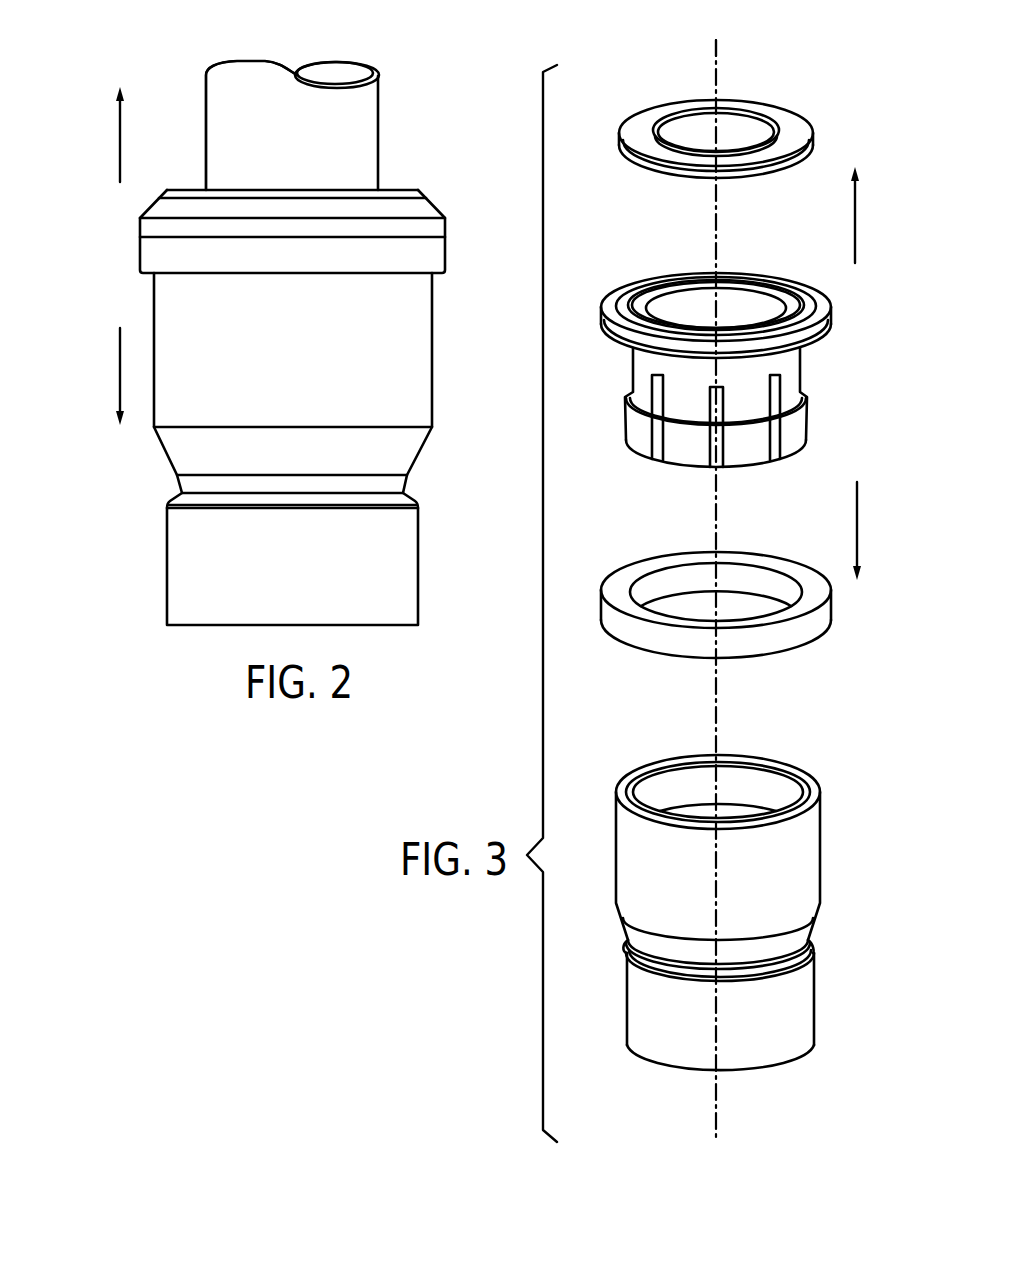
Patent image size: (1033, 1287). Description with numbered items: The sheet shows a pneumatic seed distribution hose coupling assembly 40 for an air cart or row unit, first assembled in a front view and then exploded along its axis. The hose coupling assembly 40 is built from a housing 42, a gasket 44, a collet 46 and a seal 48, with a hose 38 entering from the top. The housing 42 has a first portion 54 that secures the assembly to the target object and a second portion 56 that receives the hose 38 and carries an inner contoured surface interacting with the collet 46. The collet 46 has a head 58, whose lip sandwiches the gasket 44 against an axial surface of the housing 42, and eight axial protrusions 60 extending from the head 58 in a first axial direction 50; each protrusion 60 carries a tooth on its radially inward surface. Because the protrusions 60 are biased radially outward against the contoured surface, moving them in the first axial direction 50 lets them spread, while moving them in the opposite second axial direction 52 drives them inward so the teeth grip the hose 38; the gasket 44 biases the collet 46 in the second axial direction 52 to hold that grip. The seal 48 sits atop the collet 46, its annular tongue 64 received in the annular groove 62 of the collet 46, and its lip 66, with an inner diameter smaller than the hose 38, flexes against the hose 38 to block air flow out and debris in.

In FIG. 2, the hose 38 is at (382, 148).
In FIG. 2, the pneumatic seed distribution hose coupling assembly 40 is at (430, 85).
In FIG. 3, the pneumatic seed distribution hose coupling assembly 40 is at (643, 85).
In FIG. 2, the housing 42 is at (432, 402).
In FIG. 3, the housing 42 is at (615, 857).
In FIG. 2, the gasket 44 is at (447, 253).
In FIG. 3, the gasket 44 is at (607, 585).
In FIG. 2, the collet 46 is at (437, 210).
In FIG. 3, the collet 46 is at (625, 282).
In FIG. 2, the seal 48 is at (422, 192).
In FIG. 3, the seal 48 is at (812, 138).
In FIG. 2, the first axial direction 50 is at (118, 370).
In FIG. 3, the first axial direction 50 is at (855, 520).
In FIG. 2, the second axial direction 52 is at (120, 142).
In FIG. 3, the second axial direction 52 is at (853, 222).
In FIG. 3, the first portion 54 is at (817, 1017).
In FIG. 3, the second portion 56 is at (827, 833).
In FIG. 3, the head 58 is at (612, 315).
In FIG. 3, the axial protrusions 60 is at (748, 458).
In FIG. 3, the annular groove 62 is at (651, 285).
In FIG. 3, the annular tongue 64 is at (737, 182).
In FIG. 3, the lip 66 is at (687, 117).